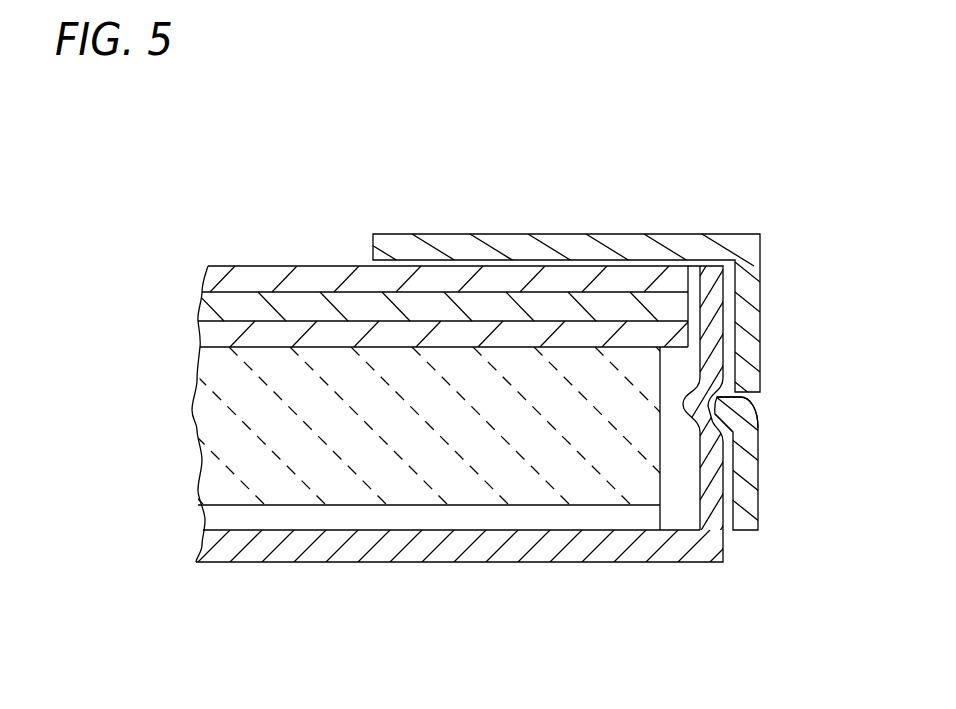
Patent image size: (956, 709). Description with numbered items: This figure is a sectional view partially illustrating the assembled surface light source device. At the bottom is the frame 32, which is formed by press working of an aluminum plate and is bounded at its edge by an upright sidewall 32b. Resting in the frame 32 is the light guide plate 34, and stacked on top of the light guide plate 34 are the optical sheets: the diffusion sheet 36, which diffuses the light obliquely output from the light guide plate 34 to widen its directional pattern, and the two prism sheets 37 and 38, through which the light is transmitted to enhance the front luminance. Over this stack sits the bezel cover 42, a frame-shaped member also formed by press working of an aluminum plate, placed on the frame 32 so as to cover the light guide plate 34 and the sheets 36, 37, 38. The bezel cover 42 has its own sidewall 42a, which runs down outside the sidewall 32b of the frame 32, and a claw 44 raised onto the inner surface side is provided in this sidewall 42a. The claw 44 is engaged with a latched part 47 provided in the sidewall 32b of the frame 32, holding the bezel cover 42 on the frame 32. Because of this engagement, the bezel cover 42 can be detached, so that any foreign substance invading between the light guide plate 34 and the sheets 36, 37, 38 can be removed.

The frame 32 is at (417, 543).
The sidewall 32b is at (710, 305).
The light guide plate 34 is at (283, 433).
The diffusion sheet 36 is at (238, 275).
The prism sheet 37 is at (288, 300).
The prism sheet 38 is at (333, 335).
The bezel cover 42 is at (572, 248).
The sidewall 42a is at (752, 488).
The claw 44 is at (732, 408).
The latched part 47 is at (727, 420).